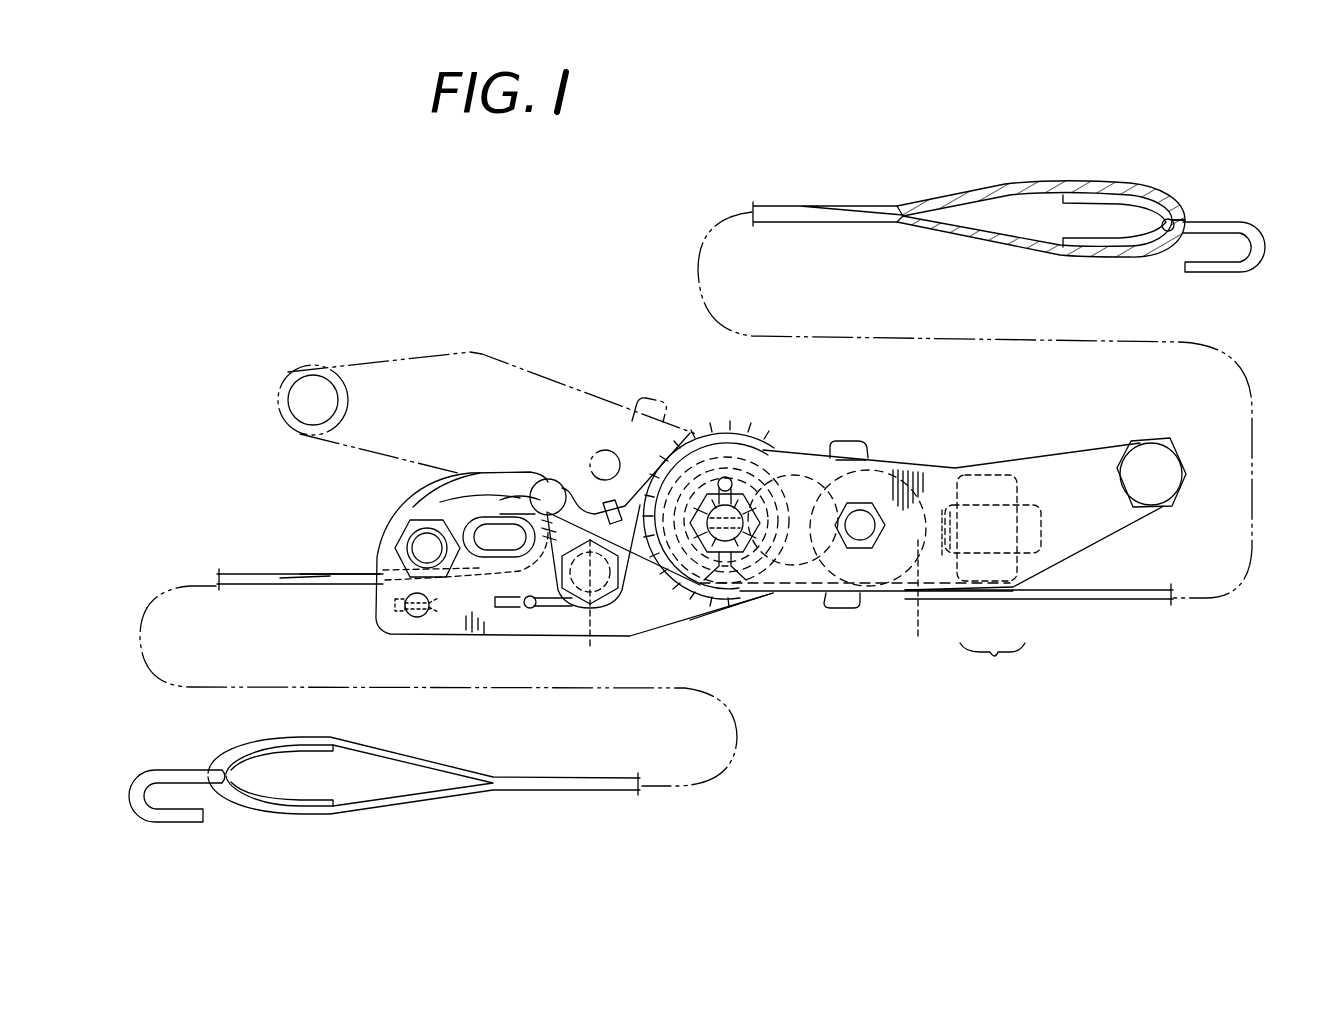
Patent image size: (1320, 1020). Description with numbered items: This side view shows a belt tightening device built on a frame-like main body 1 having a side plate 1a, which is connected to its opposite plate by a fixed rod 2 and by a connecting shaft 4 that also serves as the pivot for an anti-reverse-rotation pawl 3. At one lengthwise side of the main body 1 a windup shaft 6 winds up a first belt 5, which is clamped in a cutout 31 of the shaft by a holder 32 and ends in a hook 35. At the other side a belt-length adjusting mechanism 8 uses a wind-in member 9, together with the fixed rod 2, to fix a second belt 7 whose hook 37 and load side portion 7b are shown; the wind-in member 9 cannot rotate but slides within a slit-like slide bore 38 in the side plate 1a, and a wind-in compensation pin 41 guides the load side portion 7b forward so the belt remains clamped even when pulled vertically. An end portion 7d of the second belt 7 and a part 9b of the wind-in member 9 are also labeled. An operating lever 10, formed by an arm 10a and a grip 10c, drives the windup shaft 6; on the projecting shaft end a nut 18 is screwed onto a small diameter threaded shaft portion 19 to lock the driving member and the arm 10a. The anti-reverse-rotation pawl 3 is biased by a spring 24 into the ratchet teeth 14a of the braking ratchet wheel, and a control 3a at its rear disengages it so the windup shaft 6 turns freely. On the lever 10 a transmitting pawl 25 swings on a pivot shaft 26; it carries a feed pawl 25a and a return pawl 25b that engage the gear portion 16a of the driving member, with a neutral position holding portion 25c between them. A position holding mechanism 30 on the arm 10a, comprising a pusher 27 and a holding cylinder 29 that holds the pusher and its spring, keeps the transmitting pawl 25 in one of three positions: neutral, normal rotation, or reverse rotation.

The main body 1 is at (535, 468).
The side plate 1a is at (457, 496).
The fixed rod 2 is at (404, 538).
The anti-reverse-rotation pawl 3 is at (574, 468).
The control 3a is at (563, 460).
The connecting shaft 4 is at (593, 593).
The first belt 5 is at (1127, 592).
The windup shaft 6 is at (724, 570).
The second belt 7 is at (318, 590).
The load side portion 7b is at (266, 584).
The cable end 7d is at (322, 573).
The belt-length adjusting mechanism 8 is at (446, 502).
The wind-in member 9 is at (522, 384).
The spring end 9b is at (512, 468).
The operating lever 10 is at (1078, 447).
The arm 10a is at (1105, 462).
The grip 10c is at (1157, 478).
The ratchet teeth 14a is at (693, 440).
The gear portion 16a is at (714, 438).
The nut 18 is at (756, 565).
The small diameter threaded shaft portion 19 is at (750, 472).
The spring 24 is at (547, 608).
The transmitting pawl 25 is at (882, 449).
The feed pawl 25a is at (840, 607).
The return pawl 25b is at (866, 440).
The neutral position holding portion 25c is at (921, 607).
The pivot shaft 26 is at (862, 520).
The pusher 27 is at (955, 585).
The holding cylinder 29 is at (1000, 560).
The position holding mechanism 30 is at (992, 664).
The cutout 31 is at (673, 603).
The holder 32 is at (736, 500).
The hook 35 is at (1236, 222).
The hook 37 is at (173, 824).
The slide bore 38 is at (480, 522).
The wind-in compensation pin 41 is at (403, 620).